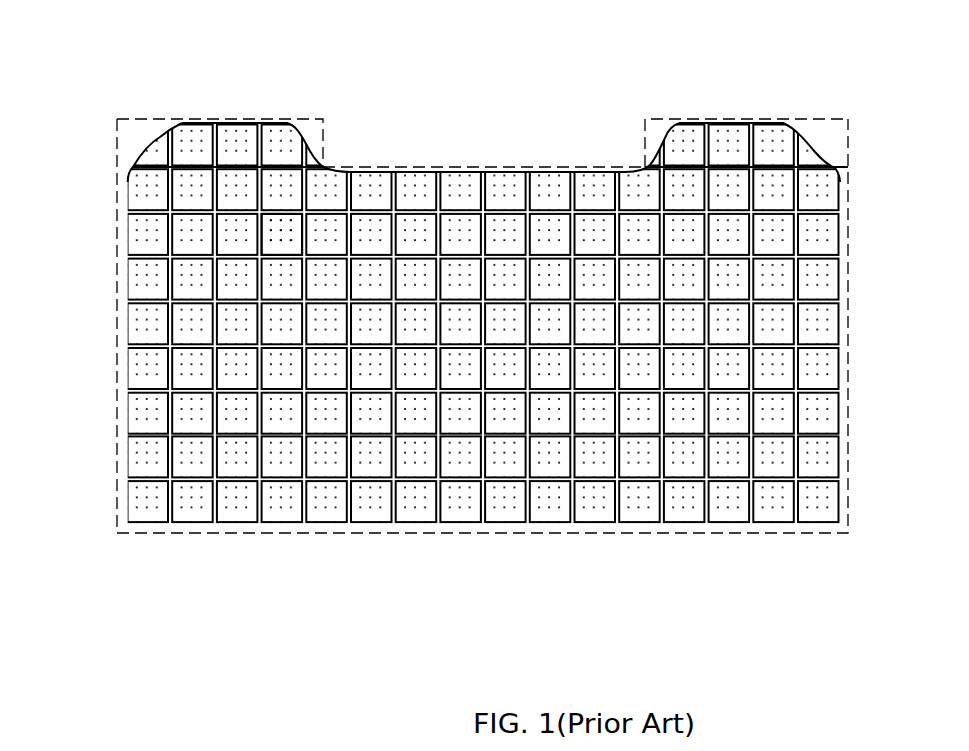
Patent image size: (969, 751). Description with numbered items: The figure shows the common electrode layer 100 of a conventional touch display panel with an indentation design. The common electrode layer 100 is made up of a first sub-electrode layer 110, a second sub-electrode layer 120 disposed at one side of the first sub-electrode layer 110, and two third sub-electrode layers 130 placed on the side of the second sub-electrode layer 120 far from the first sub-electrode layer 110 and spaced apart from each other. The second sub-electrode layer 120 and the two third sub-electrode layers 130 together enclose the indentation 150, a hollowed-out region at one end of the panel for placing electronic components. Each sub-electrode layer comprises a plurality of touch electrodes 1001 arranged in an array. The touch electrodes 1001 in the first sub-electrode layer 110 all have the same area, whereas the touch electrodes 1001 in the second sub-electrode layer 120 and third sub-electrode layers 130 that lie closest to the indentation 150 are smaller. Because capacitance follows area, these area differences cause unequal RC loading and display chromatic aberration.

The common electrode layer 100 is at (477, 278).
The first sub-electrode layer 110 is at (848, 387).
The second sub-electrode layer 120 is at (848, 188).
The third sub-electrode layer 130 is at (848, 138).
The indentation 150 is at (468, 145).
The touch electrode 1001 is at (283, 235).